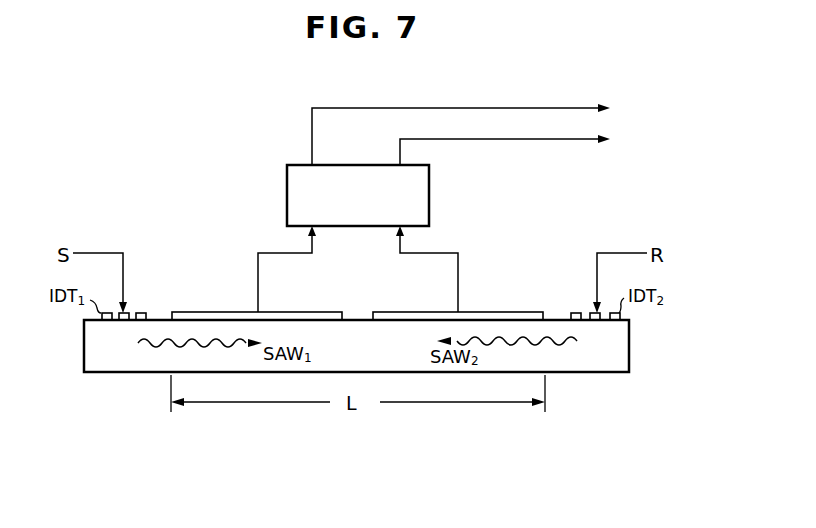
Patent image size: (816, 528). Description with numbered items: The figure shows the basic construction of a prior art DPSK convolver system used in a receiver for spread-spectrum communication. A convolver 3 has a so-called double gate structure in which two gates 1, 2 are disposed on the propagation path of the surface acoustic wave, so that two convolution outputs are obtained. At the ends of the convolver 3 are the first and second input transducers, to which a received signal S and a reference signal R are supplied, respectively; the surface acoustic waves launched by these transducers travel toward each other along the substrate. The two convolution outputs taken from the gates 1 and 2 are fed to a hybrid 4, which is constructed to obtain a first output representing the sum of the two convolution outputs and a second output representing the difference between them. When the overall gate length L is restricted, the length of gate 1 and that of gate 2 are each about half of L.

The gate 1 is at (200, 312).
The gate 2 is at (498, 312).
The convolver 3 is at (576, 365).
The hybrid 4 is at (429, 198).